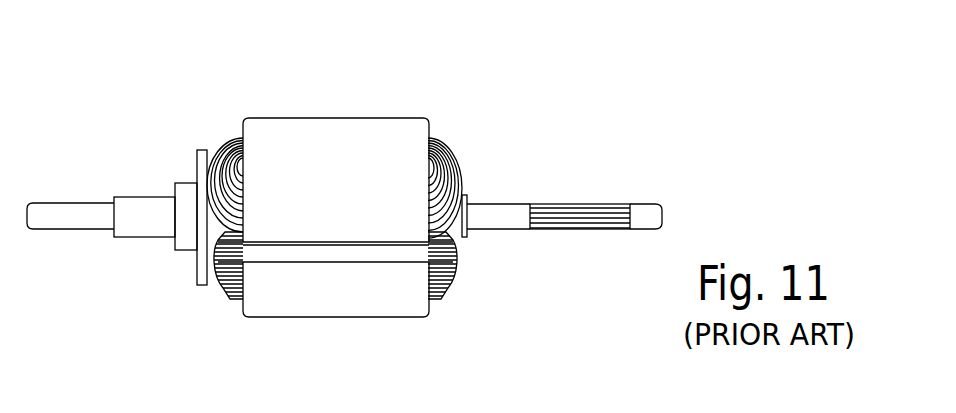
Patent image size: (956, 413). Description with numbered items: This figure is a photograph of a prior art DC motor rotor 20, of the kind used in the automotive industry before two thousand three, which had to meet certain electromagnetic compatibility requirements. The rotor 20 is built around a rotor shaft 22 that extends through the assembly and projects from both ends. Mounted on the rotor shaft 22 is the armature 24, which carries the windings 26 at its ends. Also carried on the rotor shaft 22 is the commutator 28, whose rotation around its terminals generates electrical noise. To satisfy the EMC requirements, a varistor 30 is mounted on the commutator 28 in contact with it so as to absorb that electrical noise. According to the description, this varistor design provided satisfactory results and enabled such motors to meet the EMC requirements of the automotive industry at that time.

The rotor 20 is at (379, 163).
The rotor shaft 22 is at (575, 207).
The armature 24 is at (291, 158).
The windings 26 is at (455, 161).
The commutator 28 is at (178, 197).
The varistor 30 is at (199, 150).